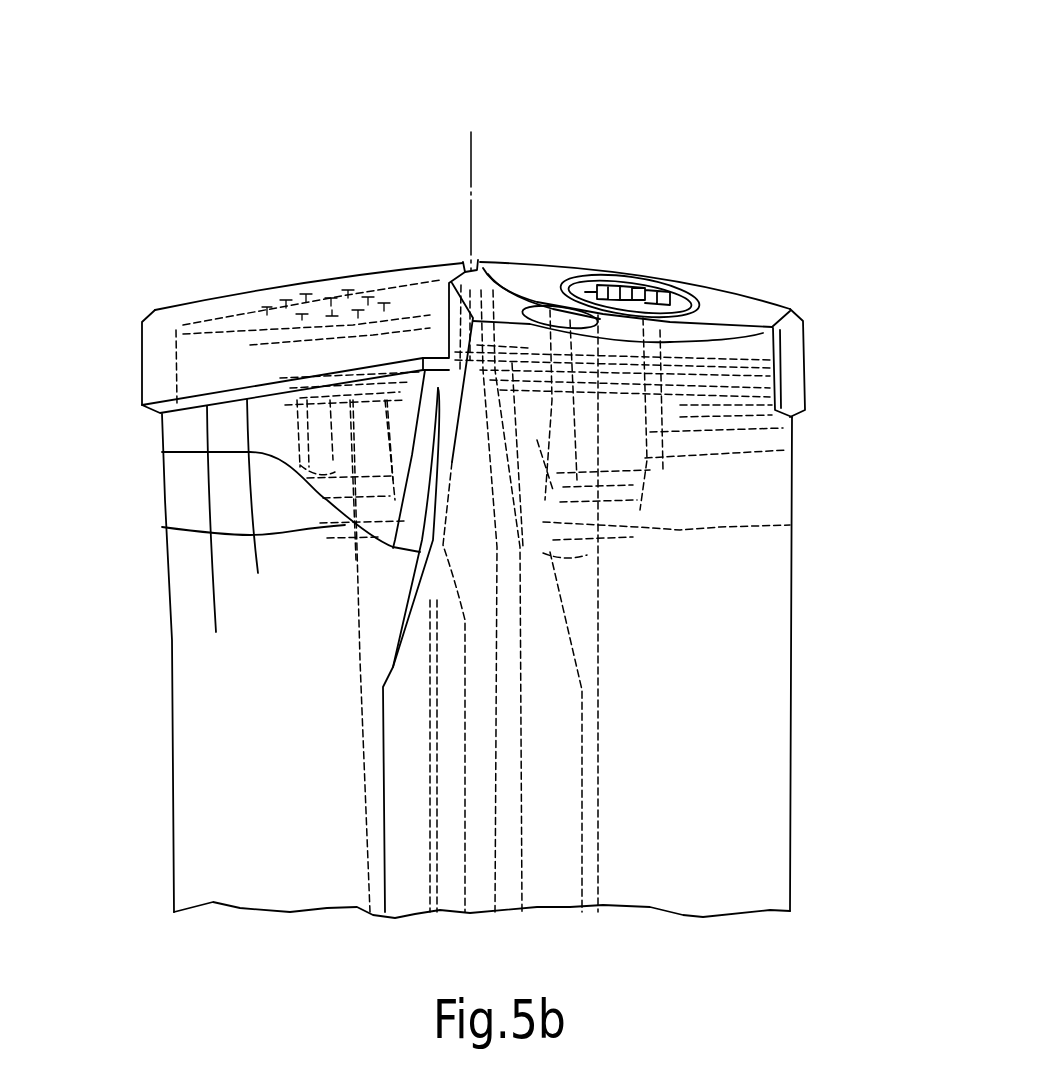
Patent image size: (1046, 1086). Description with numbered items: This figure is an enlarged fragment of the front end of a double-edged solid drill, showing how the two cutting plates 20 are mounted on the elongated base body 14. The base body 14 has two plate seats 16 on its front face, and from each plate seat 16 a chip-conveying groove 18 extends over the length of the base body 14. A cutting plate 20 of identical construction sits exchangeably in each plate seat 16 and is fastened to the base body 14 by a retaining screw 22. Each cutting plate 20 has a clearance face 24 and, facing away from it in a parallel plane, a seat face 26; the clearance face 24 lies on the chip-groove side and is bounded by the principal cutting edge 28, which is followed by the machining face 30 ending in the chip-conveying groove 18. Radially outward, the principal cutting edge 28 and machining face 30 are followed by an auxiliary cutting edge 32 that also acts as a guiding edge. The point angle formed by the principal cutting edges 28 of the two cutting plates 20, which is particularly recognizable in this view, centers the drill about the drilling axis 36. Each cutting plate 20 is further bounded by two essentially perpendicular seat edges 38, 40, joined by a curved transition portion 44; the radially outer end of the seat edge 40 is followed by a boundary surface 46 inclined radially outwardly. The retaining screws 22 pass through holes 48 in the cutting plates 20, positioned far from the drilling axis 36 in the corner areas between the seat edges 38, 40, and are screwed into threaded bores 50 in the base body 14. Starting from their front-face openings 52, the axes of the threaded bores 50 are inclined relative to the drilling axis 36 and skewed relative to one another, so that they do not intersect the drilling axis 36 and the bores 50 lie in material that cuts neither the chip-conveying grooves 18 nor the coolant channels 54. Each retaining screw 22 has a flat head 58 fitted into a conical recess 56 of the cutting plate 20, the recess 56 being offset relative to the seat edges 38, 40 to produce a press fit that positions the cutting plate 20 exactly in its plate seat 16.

The base body 14 is at (727, 736).
The plate seat 16 is at (225, 368).
The chip-conveying groove 18 is at (253, 745).
The cutting plate 20 is at (215, 315).
The retaining screw 22 is at (820, 447).
The clearance face 24 is at (545, 283).
The seat face 26 is at (263, 504).
The principal cutting edge 28 is at (247, 293).
The machining face 30 is at (215, 535).
The auxiliary cutting edge 32 is at (150, 310).
The drilling axis 36 is at (474, 150).
The seat edge 38 is at (516, 273).
The seat edge 40 is at (717, 290).
The curved transition portion 44 is at (558, 283).
The boundary surface 46 is at (772, 327).
The hole 48 is at (280, 370).
The threaded bore 50 is at (327, 525).
The front-face opening 52 is at (325, 395).
The coolant channel 54 is at (362, 667).
The conical recess 56 is at (400, 270).
The flat head 58 is at (700, 287).